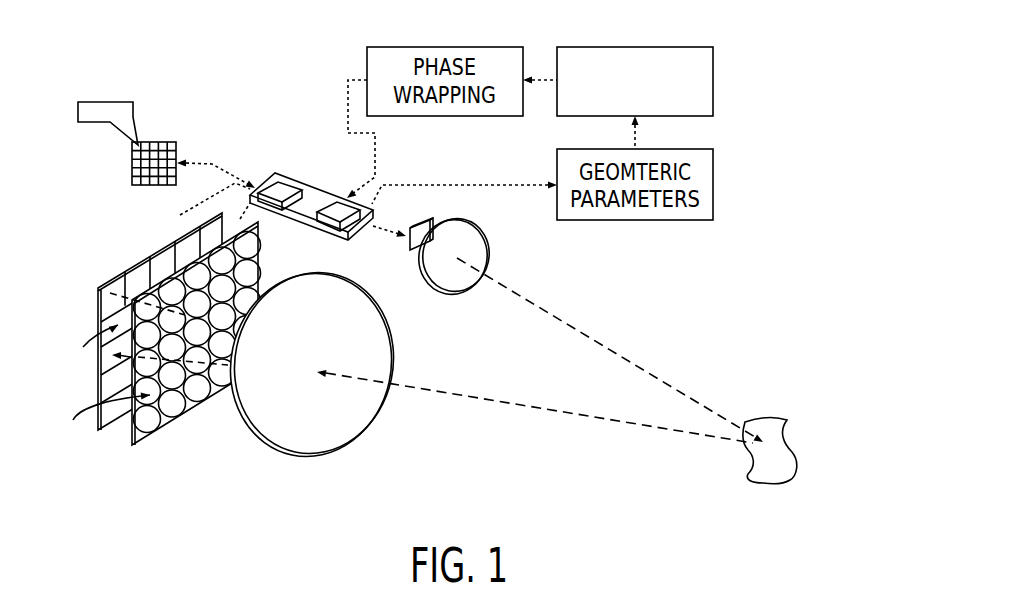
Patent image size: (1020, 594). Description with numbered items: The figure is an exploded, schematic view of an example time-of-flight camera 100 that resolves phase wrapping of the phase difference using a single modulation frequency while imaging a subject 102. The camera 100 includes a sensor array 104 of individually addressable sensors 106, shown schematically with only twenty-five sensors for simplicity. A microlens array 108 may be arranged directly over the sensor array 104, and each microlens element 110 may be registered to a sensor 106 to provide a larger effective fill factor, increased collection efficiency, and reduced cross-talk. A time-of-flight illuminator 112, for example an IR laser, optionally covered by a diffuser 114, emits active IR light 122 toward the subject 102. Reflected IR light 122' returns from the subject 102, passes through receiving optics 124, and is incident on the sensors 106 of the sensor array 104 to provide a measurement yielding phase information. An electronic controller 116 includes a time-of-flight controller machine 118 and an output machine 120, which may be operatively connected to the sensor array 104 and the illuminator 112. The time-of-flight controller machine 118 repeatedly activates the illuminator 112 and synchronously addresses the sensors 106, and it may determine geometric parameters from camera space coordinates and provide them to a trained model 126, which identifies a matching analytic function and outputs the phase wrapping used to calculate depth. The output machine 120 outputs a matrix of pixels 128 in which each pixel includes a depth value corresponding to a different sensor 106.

The time-of-flight camera 100 is at (124, 43).
The subject 102 is at (773, 421).
The sensor array 104 is at (115, 278).
The sensor 106 is at (96, 347).
The microlens array 108 is at (147, 445).
The microlens element 110 is at (103, 423).
The time-of-flight illuminator 112 is at (422, 245).
The diffuser 114 is at (487, 237).
The electronic controller 116 is at (358, 236).
The time-of-flight controller machine 118 is at (325, 223).
The output machine 120 is at (297, 188).
The active IR light 122 is at (610, 350).
The reflected IR light 122' is at (535, 406).
The receiving optics 124 is at (312, 457).
The trained model 126 is at (625, 47).
The matrix of pixels 128 is at (155, 140).